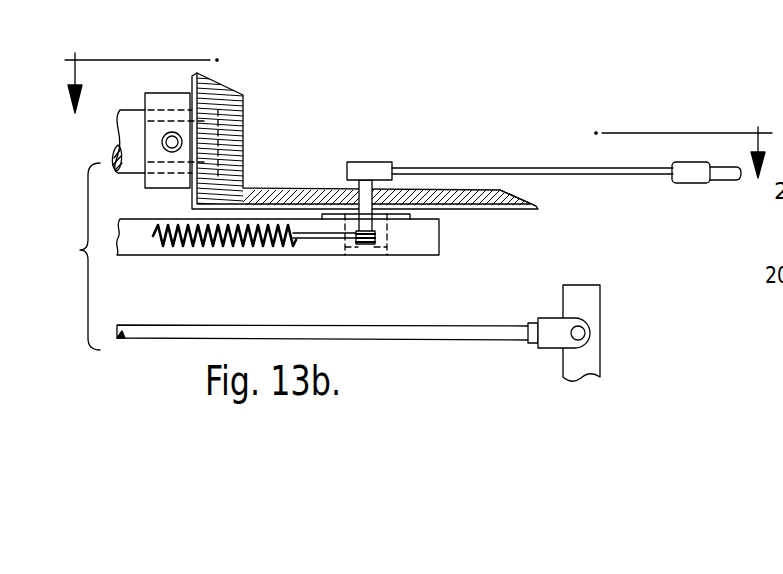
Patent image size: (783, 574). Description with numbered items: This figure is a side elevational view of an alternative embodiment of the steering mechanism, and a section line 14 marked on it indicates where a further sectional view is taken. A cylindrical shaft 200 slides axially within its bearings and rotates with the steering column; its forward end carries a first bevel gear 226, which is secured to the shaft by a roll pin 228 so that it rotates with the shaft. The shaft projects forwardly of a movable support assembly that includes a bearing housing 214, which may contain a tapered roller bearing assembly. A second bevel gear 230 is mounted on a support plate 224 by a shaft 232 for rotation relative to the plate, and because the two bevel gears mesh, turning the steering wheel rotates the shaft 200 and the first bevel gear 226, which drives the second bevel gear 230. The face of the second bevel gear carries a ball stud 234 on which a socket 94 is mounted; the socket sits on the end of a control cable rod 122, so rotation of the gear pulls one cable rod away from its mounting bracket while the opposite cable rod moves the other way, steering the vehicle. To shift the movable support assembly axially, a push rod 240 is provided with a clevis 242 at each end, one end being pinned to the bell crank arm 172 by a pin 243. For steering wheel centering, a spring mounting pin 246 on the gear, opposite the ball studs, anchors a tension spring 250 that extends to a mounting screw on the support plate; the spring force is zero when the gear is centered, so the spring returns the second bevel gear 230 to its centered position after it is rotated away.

The section line 14- 14 is at (421, 101).
The socket 94 is at (376, 162).
The control cable rod 122 is at (505, 168).
The bell crank arm 172 is at (600, 362).
The cylindrical shaft 200 is at (140, 110).
The bearing housing 214 is at (684, 191).
The support plate 224 is at (133, 250).
The first bevel gear 226 is at (228, 93).
The roll pin 228 is at (172, 132).
The second bevel gear 230 is at (530, 205).
The shaft 232 is at (392, 250).
The ball stud 234 is at (347, 178).
The push rod 240 is at (497, 300).
The clevis 242 is at (548, 320).
The pin 243 is at (596, 330).
The spring mounting pin 246 is at (362, 250).
The tension spring 250 is at (187, 248).